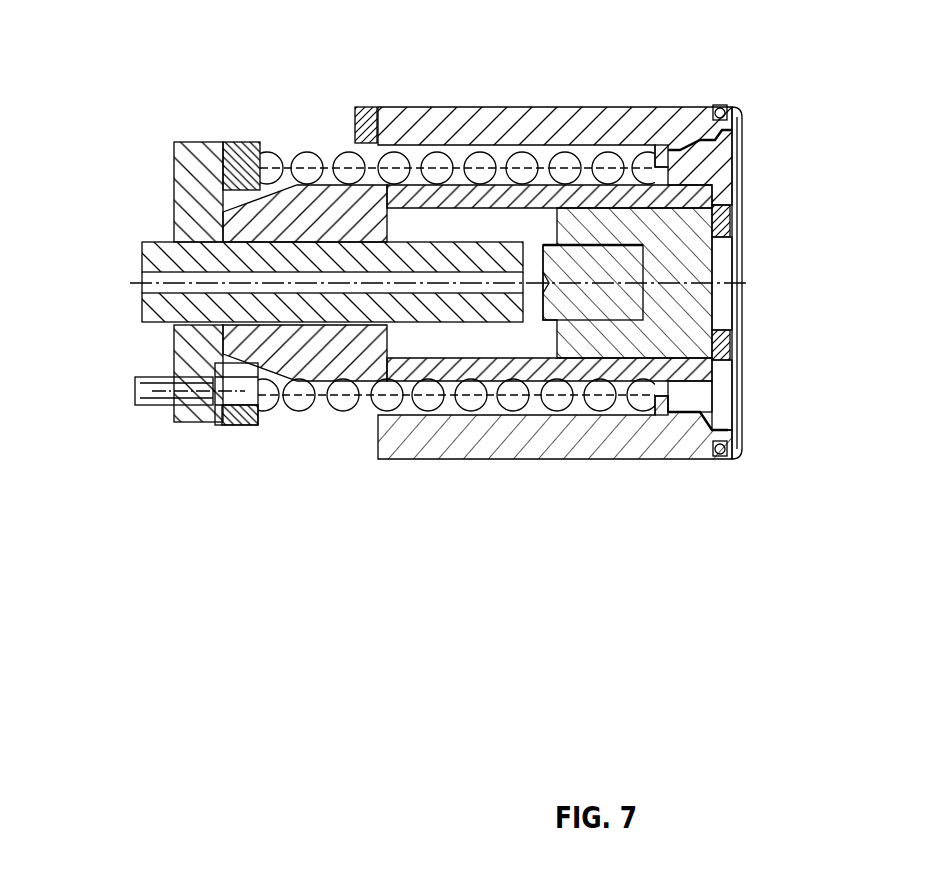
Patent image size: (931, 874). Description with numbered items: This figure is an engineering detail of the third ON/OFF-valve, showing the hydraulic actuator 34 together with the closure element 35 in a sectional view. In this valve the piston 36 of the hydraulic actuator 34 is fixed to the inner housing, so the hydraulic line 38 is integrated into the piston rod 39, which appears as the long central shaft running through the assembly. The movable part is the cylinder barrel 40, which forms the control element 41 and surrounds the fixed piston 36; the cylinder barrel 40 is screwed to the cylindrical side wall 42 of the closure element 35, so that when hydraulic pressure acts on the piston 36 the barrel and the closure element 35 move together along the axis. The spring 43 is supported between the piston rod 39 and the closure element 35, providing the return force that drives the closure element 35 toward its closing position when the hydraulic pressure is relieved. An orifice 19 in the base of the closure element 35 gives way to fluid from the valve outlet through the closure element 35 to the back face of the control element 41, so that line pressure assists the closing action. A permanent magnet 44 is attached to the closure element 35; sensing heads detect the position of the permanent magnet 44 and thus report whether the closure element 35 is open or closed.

The orifice 19 is at (712, 392).
The hydraulic actuator 34 is at (439, 366).
The closure element 35 is at (533, 130).
The piston 36 is at (712, 266).
The hydraulic line 38 is at (155, 279).
The piston rod 39 is at (318, 305).
The cylinder barrel 40 is at (712, 173).
The control element 41 is at (768, 277).
The cylindrical side wall 42 is at (624, 242).
The spring 43 is at (351, 402).
The permanent magnet 44 is at (357, 108).